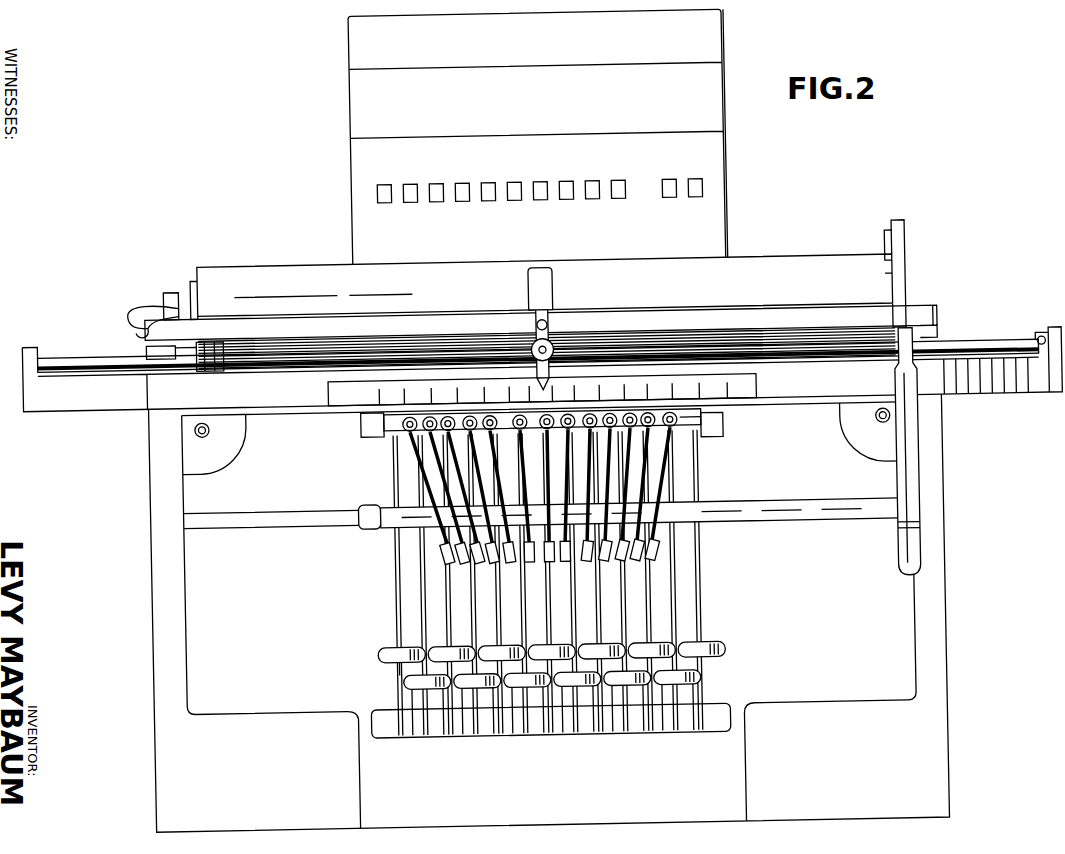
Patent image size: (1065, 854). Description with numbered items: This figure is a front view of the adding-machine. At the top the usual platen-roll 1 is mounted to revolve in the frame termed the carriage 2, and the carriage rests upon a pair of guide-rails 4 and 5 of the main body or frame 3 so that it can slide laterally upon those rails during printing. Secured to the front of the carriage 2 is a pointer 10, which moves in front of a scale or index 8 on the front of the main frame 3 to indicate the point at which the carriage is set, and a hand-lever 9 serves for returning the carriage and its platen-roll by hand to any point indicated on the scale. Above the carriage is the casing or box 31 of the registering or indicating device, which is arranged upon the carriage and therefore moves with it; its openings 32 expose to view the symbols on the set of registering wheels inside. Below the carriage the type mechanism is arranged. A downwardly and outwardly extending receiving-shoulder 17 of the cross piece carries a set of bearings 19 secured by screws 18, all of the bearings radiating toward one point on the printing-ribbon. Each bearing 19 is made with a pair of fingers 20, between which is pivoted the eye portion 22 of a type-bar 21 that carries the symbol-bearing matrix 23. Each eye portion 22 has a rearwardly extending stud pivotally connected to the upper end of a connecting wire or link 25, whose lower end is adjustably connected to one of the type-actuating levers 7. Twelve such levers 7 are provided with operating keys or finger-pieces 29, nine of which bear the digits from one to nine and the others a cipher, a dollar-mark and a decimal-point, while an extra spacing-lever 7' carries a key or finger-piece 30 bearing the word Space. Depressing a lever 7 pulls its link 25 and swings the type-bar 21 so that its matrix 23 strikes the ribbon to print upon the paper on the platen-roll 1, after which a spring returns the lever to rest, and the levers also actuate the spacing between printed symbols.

The platen-roll 1 is at (516, 281).
The carriage 2 is at (933, 304).
The main body or frame 3 is at (893, 710).
The guide-rail 4 is at (521, 367).
The guide-rail 5 is at (85, 345).
The type-actuating levers 7 is at (575, 722).
The spacing-lever 7' is at (382, 680).
The scale or index 8 is at (329, 389).
The hand-lever 9 is at (918, 429).
The pointer 10 is at (533, 330).
The receiving-shoulder 17 is at (363, 437).
The screws 18 is at (700, 421).
The bearings 19 is at (362, 426).
The fingers 20 is at (406, 429).
The type-bar 21 is at (540, 514).
The eye portion 22 is at (535, 485).
The matrix 23 is at (472, 563).
The connecting wire or link 25 is at (445, 593).
The operating keys or finger-pieces 29 is at (722, 656).
The key or finger-piece 30 is at (389, 647).
The casing or box 31 is at (538, 136).
The openings 32 is at (440, 203).